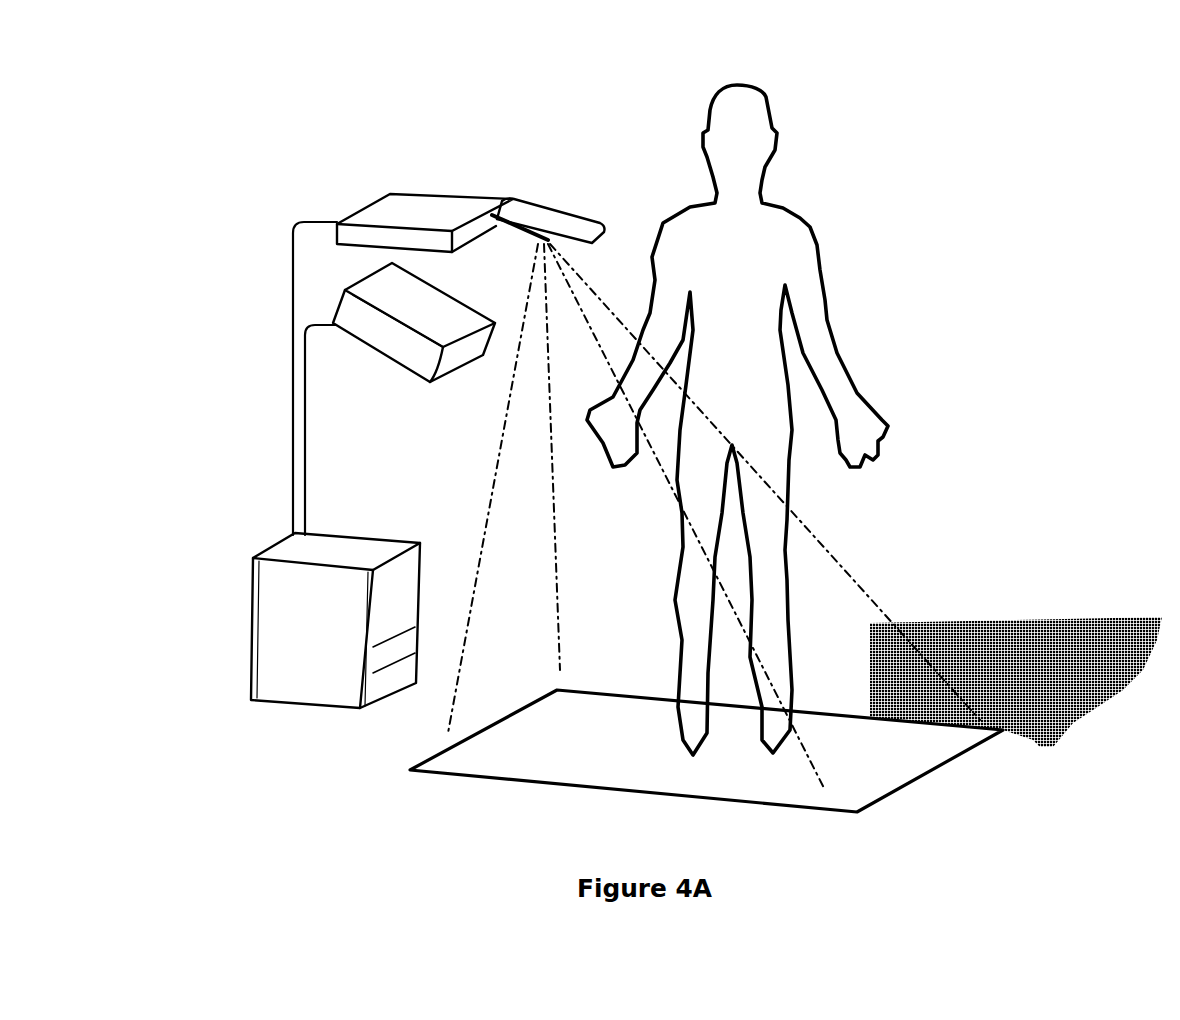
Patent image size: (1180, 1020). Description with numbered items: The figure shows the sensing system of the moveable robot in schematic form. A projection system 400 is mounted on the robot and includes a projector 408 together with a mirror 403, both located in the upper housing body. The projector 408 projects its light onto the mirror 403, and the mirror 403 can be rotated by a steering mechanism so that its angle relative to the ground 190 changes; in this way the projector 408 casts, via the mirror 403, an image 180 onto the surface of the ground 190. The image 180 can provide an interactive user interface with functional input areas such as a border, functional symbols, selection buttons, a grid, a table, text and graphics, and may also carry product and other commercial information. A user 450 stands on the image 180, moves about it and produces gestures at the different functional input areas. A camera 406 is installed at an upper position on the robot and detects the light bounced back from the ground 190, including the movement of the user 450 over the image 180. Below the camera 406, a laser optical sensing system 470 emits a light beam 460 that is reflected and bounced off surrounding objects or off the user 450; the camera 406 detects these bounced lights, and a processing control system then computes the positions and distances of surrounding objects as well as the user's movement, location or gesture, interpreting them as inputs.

The projection system 400 is at (352, 197).
The projector 408 is at (425, 210).
The mirror 403 is at (553, 220).
The camera 406 is at (357, 315).
The user 450 is at (755, 160).
The laser optical sensing system 470 is at (393, 647).
The image 180 is at (840, 747).
The ground 190 is at (713, 656).
The light beam 460 is at (1050, 653).